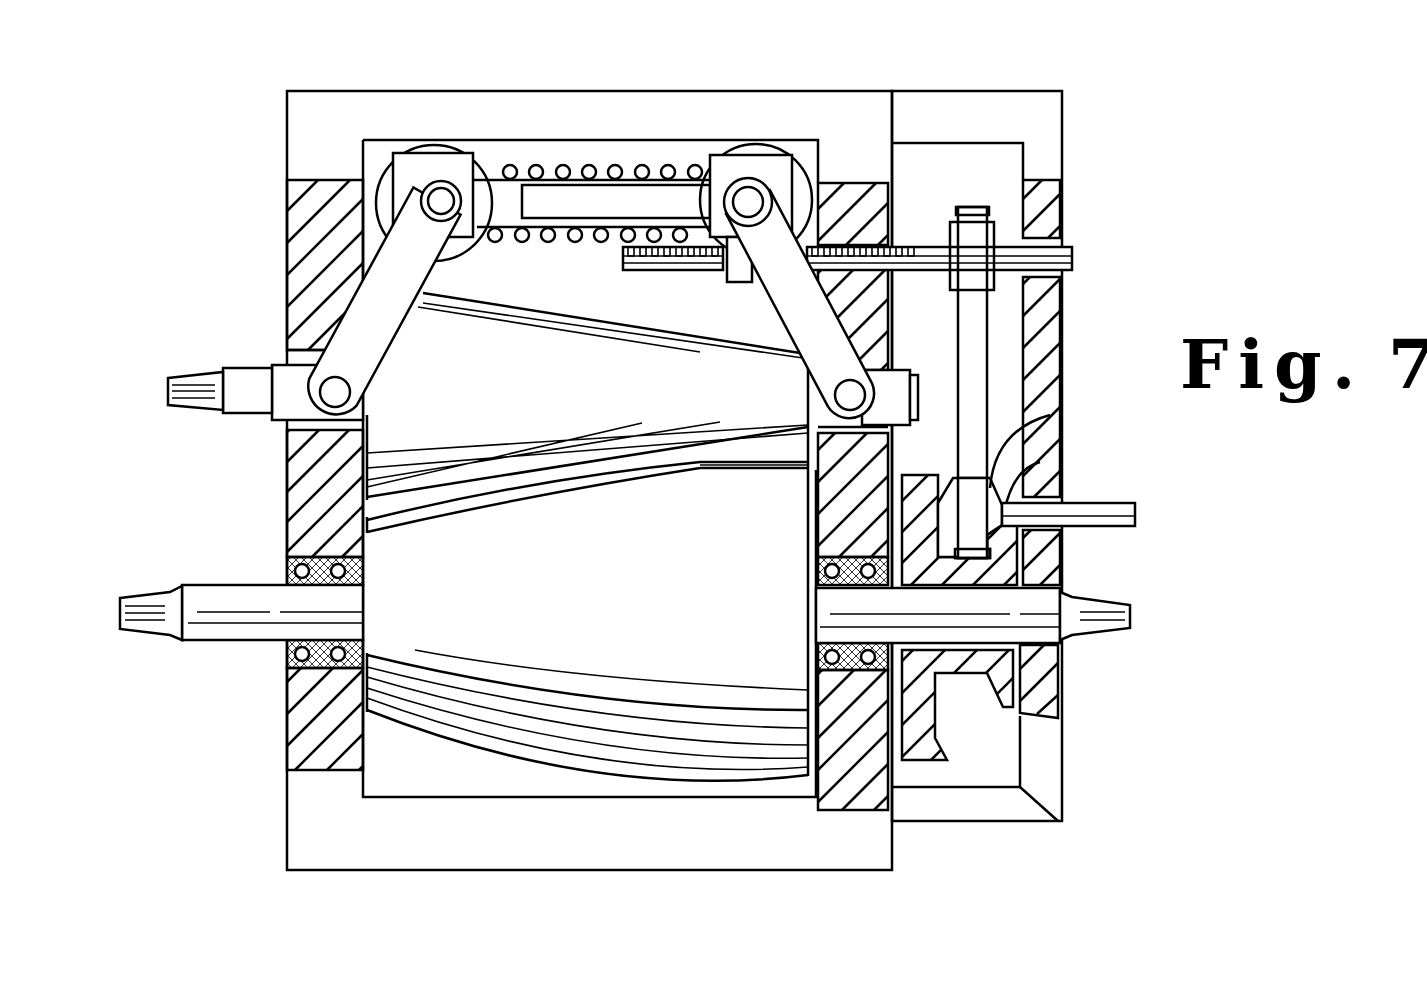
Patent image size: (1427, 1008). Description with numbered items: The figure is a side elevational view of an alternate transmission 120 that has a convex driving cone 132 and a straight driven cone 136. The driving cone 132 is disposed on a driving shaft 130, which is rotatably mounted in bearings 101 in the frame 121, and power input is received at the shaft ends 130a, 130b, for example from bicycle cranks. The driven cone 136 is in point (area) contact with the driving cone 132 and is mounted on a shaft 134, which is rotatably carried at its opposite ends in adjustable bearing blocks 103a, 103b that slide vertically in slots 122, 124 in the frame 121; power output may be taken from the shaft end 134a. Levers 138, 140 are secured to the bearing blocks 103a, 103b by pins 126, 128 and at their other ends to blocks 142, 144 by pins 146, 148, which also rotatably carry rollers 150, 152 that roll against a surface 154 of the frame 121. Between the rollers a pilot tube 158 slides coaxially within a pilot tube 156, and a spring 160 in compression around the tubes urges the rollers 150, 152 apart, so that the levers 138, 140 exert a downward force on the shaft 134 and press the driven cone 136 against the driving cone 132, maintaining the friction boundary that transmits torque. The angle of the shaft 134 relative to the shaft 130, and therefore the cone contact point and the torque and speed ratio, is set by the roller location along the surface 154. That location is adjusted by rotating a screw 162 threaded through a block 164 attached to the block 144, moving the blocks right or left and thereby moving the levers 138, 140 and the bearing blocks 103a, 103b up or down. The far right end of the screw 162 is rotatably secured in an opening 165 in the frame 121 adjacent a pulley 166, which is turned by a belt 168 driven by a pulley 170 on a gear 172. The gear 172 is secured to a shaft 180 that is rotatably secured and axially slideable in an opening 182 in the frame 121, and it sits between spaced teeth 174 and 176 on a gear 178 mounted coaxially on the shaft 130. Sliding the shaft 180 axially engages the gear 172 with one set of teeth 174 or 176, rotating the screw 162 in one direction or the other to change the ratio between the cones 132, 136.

The bearings 101 is at (815, 655).
The adjustable bearing block 103a is at (287, 408).
The adjustable bearing block 103b is at (898, 370).
The transmission 120 is at (326, 70).
The frame 121 is at (288, 115).
The slot 122 is at (367, 440).
The slot 124 is at (812, 478).
The pin 126 is at (345, 392).
The pin 128 is at (850, 397).
The driving shaft 130 is at (258, 598).
The shaft end 130a is at (143, 633).
The shaft end 130b is at (1093, 643).
The driving cone 132 is at (587, 621).
The driven cone shaft 134 is at (250, 367).
The shaft end 134a is at (193, 375).
The driven cone 136 is at (587, 413).
The lever 138 is at (384, 300).
The lever 140 is at (800, 304).
The block 142 is at (452, 160).
The block 144 is at (734, 165).
The pin 146 is at (433, 200).
The pin 148 is at (757, 207).
The roller 150 is at (462, 260).
The roller 152 is at (820, 178).
The surface 154 is at (545, 140).
The pilot tube 156 is at (575, 168).
The pilot tube 158 is at (572, 206).
The spring 160 is at (641, 165).
The screw 162 is at (915, 247).
The block 164 is at (737, 283).
The opening 165 is at (1060, 285).
The pulley 166 is at (948, 280).
The belt 168 is at (966, 207).
The pulley 170 is at (993, 571).
The gear 172 is at (997, 478).
The teeth 174 is at (953, 500).
The teeth 176 is at (987, 683).
The gear 178 is at (917, 762).
The shaft 180 is at (1088, 503).
The opening 182 is at (1033, 500).